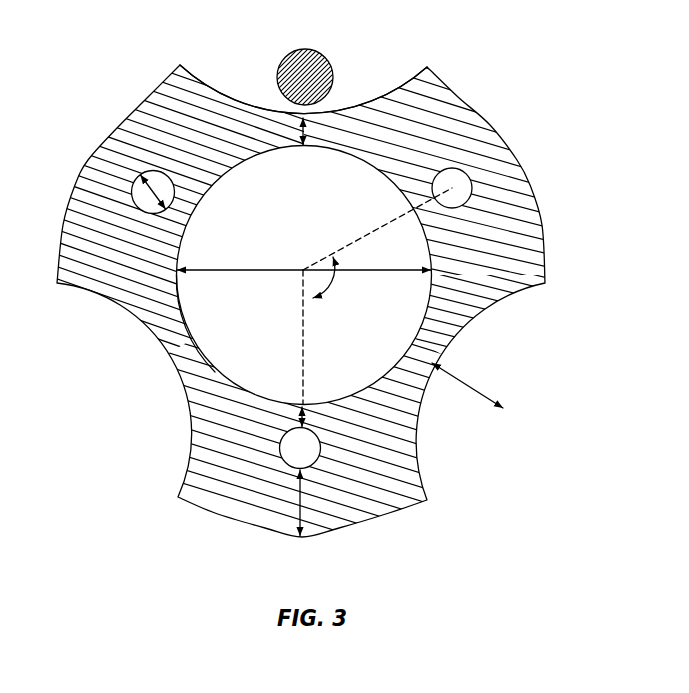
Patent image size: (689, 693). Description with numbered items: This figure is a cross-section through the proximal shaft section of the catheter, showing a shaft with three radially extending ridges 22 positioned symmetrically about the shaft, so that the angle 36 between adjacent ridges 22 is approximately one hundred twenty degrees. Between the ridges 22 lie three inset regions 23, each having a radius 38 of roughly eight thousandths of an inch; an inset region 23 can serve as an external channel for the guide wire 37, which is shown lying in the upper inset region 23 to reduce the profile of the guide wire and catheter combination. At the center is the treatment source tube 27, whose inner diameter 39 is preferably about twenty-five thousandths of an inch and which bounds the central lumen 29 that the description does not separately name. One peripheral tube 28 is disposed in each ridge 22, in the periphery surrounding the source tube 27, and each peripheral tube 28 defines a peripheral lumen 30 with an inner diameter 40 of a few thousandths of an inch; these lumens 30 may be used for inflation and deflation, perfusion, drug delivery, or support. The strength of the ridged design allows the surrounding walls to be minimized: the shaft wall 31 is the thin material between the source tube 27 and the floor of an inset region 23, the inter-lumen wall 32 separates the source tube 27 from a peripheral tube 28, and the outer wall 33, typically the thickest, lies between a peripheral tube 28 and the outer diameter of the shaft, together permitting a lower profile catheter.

The radially extending ridge 22 is at (473, 95).
The inset region 23 is at (327, 115).
The treatment source tube 27 is at (215, 372).
The peripheral tube 28 is at (472, 190).
The central bore 29 is at (318, 206).
The peripheral lumen 30 is at (450, 187).
The shaft wall 31 is at (293, 137).
The inter-lumen wall 32 is at (308, 403).
The outer wall 33 is at (297, 500).
The angle 36 is at (330, 285).
The guide wire 37 is at (310, 50).
The radius 38 is at (468, 382).
The inner diameter 39 is at (203, 268).
The inner diameter 40 is at (140, 175).